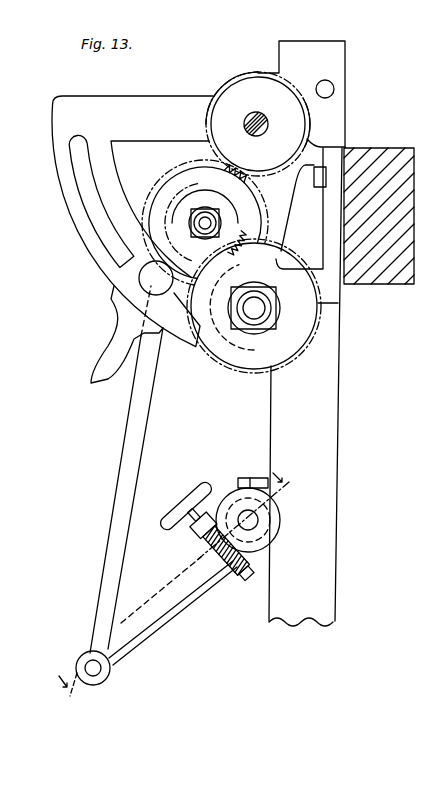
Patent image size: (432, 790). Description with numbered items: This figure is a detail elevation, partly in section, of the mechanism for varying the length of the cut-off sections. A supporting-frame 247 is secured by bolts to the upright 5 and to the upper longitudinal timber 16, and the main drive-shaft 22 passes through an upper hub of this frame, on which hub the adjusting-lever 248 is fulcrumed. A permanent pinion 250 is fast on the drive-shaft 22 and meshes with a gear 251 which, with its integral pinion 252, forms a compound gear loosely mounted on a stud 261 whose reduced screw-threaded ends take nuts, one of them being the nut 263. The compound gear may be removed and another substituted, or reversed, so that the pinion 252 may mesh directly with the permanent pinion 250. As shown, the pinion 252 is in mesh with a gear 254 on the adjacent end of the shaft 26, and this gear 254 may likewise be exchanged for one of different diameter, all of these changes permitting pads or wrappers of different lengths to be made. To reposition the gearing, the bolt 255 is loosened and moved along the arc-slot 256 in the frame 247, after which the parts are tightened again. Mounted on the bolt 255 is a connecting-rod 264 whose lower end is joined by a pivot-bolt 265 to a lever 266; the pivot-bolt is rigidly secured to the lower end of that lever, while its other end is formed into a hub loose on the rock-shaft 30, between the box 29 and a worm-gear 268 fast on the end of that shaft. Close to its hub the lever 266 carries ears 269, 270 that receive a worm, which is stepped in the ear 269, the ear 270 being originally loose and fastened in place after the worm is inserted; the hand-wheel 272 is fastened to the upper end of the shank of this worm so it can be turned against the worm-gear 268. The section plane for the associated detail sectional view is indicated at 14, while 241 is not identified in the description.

The upright 5 is at (305, 387).
The longitudinal timber 14 is at (176, 591).
The upper longitudinal timber 16 is at (360, 150).
The drive-shaft 22 is at (247, 116).
The shaft 26 is at (251, 318).
The box 29 is at (242, 476).
The rock-shaft 30 is at (258, 518).
The supporting-frame 247 is at (132, 221).
The adjusting-lever 248 is at (113, 320).
The permanent pinion 250 is at (258, 124).
The gear 251 is at (172, 190).
The pinion 252 is at (209, 195).
The gear 254 is at (212, 355).
The bolt 255 is at (150, 277).
The arc-slot 256 is at (80, 201).
The stud 261 is at (196, 222).
The nut 263 is at (163, 193).
The connecting-rod 264 is at (117, 489).
The pivot-bolt 265 is at (112, 675).
The lever 266 is at (150, 624).
The worm-gear 268 is at (276, 540).
The ear 269 is at (240, 585).
The ear 270 is at (192, 567).
The hidden link 241 is at (222, 575).
The hand-wheel 272 is at (186, 499).